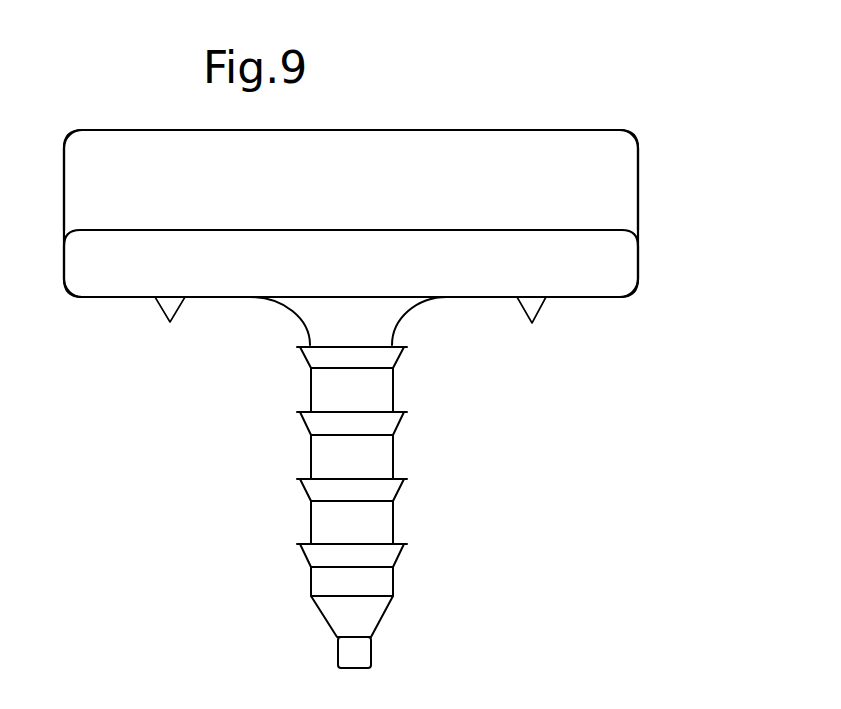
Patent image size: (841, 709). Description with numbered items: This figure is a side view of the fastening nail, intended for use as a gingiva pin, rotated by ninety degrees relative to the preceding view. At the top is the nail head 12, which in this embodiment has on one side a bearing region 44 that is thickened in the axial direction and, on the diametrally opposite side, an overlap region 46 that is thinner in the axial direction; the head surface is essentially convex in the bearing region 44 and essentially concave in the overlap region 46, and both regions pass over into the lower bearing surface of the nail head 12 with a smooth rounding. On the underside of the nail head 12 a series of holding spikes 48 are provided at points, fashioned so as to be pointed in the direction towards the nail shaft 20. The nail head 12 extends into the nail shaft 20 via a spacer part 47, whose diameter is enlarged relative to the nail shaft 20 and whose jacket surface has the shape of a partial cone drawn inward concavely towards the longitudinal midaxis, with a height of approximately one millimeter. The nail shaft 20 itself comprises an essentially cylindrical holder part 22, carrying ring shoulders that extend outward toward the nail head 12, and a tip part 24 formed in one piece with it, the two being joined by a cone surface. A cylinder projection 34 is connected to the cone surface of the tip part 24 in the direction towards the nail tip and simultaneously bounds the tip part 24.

The nail head 12 is at (665, 218).
The bearing region 44 is at (612, 183).
The overlap region 46 is at (622, 273).
The holding spikes 48 is at (180, 302).
The spacer part 47 is at (397, 313).
The nail shaft 20 is at (442, 437).
The holder part 22 is at (378, 521).
The tip part 24 is at (403, 618).
The cylinder projection 34 is at (363, 653).